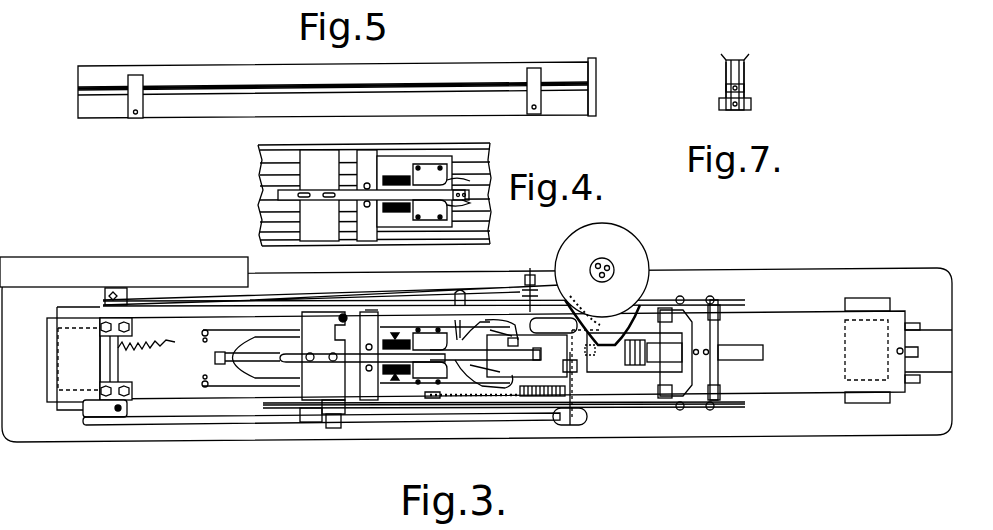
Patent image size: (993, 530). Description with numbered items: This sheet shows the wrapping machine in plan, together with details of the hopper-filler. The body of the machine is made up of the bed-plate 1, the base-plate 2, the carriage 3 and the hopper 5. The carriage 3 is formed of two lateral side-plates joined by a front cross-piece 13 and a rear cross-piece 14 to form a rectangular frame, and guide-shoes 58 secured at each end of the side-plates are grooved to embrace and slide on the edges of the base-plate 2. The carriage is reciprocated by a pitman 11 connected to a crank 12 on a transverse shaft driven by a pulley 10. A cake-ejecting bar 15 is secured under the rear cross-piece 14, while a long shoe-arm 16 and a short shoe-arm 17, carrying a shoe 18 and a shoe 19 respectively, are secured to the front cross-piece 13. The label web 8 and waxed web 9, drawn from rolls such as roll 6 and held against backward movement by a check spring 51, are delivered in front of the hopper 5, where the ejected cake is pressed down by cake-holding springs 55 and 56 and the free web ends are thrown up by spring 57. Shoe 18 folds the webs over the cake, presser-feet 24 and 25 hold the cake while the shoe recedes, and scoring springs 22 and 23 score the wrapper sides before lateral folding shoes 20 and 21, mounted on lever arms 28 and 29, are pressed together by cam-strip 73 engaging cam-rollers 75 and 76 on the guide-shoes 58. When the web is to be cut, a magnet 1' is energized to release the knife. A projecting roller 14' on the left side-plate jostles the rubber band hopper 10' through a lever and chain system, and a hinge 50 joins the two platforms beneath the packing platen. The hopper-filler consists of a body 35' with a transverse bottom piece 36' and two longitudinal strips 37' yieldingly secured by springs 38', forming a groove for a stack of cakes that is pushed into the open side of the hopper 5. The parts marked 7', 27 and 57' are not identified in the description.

In FIG. 3, the bed-plate 1 is at (477, 355).
In FIG. 3, the magnet 1' is at (577, 388).
In FIG. 3, the base-plate 2 is at (158, 395).
In FIG. 3, the carriage 3 is at (690, 303).
In FIG. 3, the hopper 5 is at (393, 408).
In FIG. 3, the roll 6 is at (542, 398).
In FIG. 3, the link 7' is at (549, 300).
In FIG. 3, the label web 8 is at (331, 295).
In FIG. 3, the waxed web 9 is at (952, 351).
In FIG. 3, the pulley 10 is at (124, 272).
In FIG. 3, the rubber band hopper 10' is at (602, 284).
In FIG. 3, the pitman 11 is at (252, 425).
In FIG. 3, the crank 12 is at (129, 367).
In FIG. 3, the front cross-piece 13 is at (406, 356).
In FIG. 4, the rear cross-piece 14 is at (374, 194).
In FIG. 3, the rear cross-piece 14 is at (531, 350).
In FIG. 3, the projecting roller 14' is at (450, 295).
In FIG. 3, the cake-ejecting bar 15 is at (559, 371).
In FIG. 3, the long shoe-arm 16 is at (335, 356).
In FIG. 4, the short shoe-arm 17 is at (373, 194).
In FIG. 3, the shoe 18 is at (536, 352).
In FIG. 4, the shoe 19 is at (465, 197).
In FIG. 4, the lateral folding shoe 20 is at (415, 210).
In FIG. 3, the lateral folding shoe 20 is at (430, 373).
In FIG. 4, the lateral folding shoe 21 is at (415, 175).
In FIG. 3, the lateral folding shoe 21 is at (430, 339).
In FIG. 3, the scoring spring 22 is at (484, 377).
In FIG. 3, the scoring spring 23 is at (472, 331).
In FIG. 3, the presser-foot 24 is at (472, 399).
In FIG. 3, the presser-foot 25 is at (498, 333).
In FIG. 3, the pivot 27 is at (448, 326).
In FIG. 3, the lever arm 28 is at (396, 377).
In FIG. 3, the lever arm 29 is at (394, 336).
In FIG. 5, the filler body 35' is at (337, 88).
In FIG. 7, the transverse bottom piece 36' is at (739, 72).
In FIG. 7, the longitudinal strips 37' is at (733, 80).
In FIG. 5, the springs 38' is at (343, 77).
In FIG. 3, the hinge 50 is at (245, 358).
In FIG. 3, the check spring 51 is at (912, 352).
In FIG. 3, the cake-holding spring 55 is at (630, 341).
In FIG. 3, the cake-holding spring 56 is at (634, 366).
In FIG. 3, the spring 57 is at (527, 356).
In FIG. 5, the rail 57' is at (333, 77).
In FIG. 3, the guide-shoes 58 is at (490, 368).
In FIG. 3, the cam-strip 73 is at (340, 410).
In FIG. 3, the cam-roller 75 is at (370, 310).
In FIG. 3, the cam-roller 76 is at (344, 314).